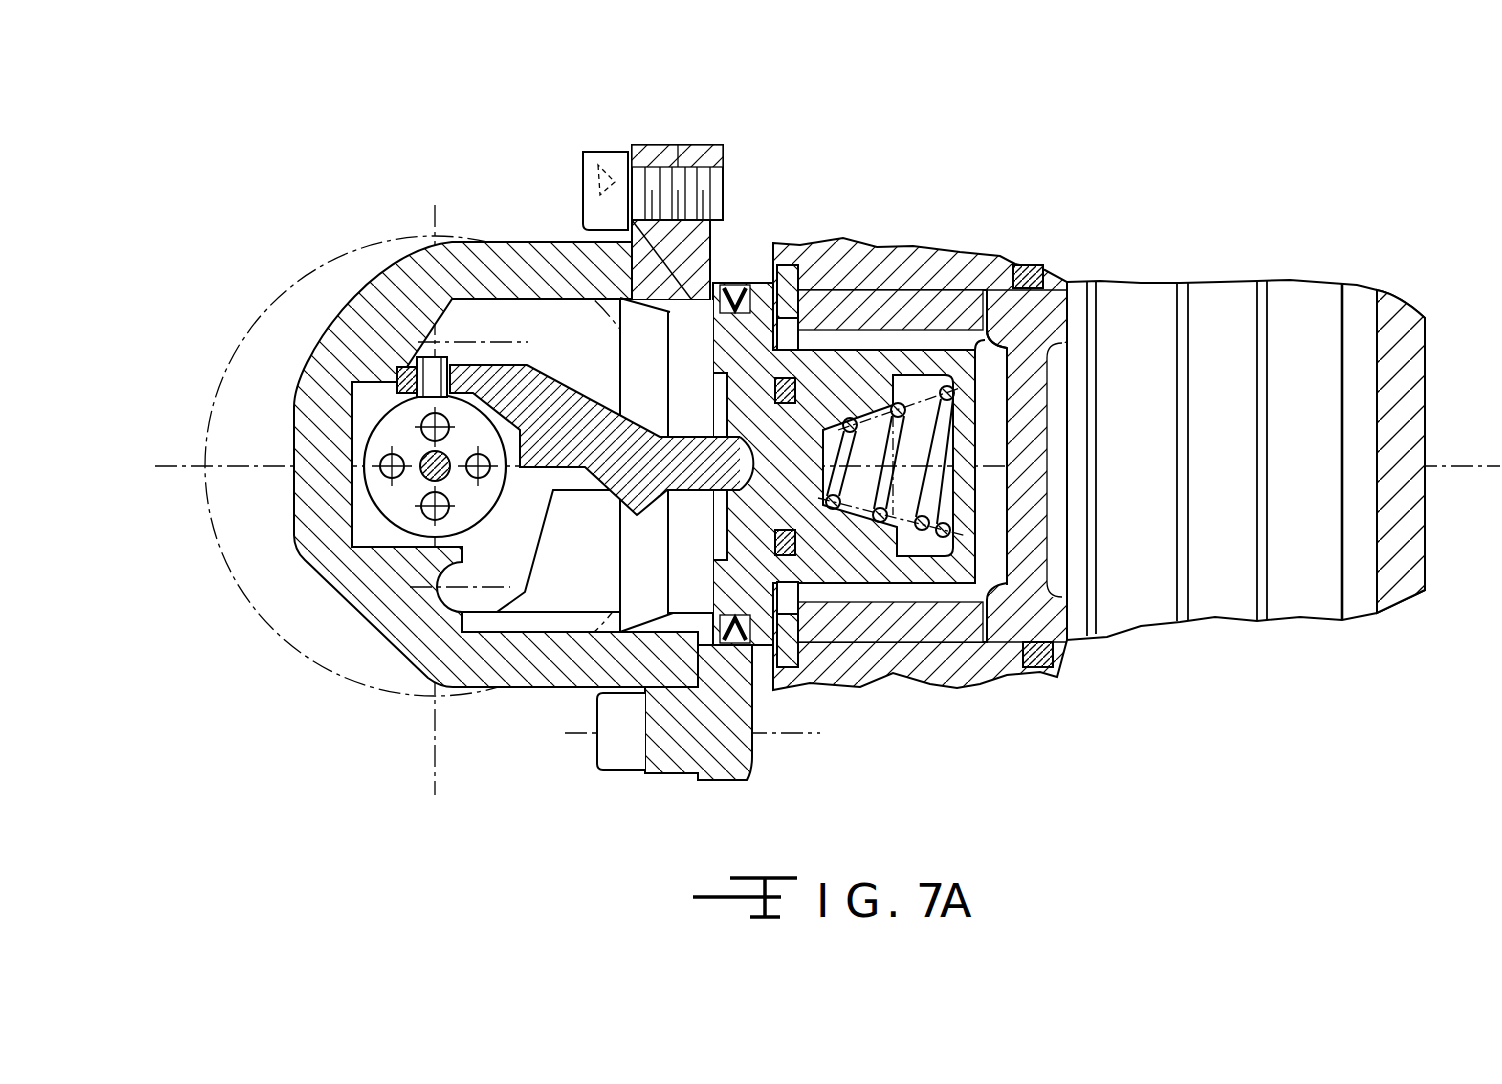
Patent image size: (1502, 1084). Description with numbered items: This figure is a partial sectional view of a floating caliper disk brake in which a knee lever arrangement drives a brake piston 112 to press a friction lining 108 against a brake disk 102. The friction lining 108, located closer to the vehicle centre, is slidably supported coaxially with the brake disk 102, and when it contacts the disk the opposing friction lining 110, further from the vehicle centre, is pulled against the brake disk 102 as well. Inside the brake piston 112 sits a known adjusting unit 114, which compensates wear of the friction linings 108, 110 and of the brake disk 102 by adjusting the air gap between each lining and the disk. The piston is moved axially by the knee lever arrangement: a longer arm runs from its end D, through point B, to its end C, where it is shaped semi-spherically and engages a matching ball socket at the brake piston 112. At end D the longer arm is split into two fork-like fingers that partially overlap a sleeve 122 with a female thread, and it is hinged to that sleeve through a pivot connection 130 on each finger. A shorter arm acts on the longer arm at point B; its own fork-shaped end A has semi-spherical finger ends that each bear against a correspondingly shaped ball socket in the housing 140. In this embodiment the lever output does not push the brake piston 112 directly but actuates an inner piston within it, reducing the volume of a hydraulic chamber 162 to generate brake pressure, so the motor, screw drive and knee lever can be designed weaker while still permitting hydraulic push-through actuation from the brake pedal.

The pivot connection 130 is at (407, 367).
The sleeve with female thread 122 is at (393, 508).
The housing 140 is at (482, 668).
The hydraulic chamber 162 is at (987, 300).
The friction lining 108 is at (1096, 282).
The brake disk 102 is at (1219, 308).
The friction lining 110 is at (1317, 297).
The brake piston 112 is at (940, 625).
The adjusting unit 114 is at (938, 500).
The end A of the shorter arm A is at (440, 362).
The point B is at (588, 470).
The end C of the longer arm C is at (760, 438).
The end D of the longer arm D is at (417, 370).